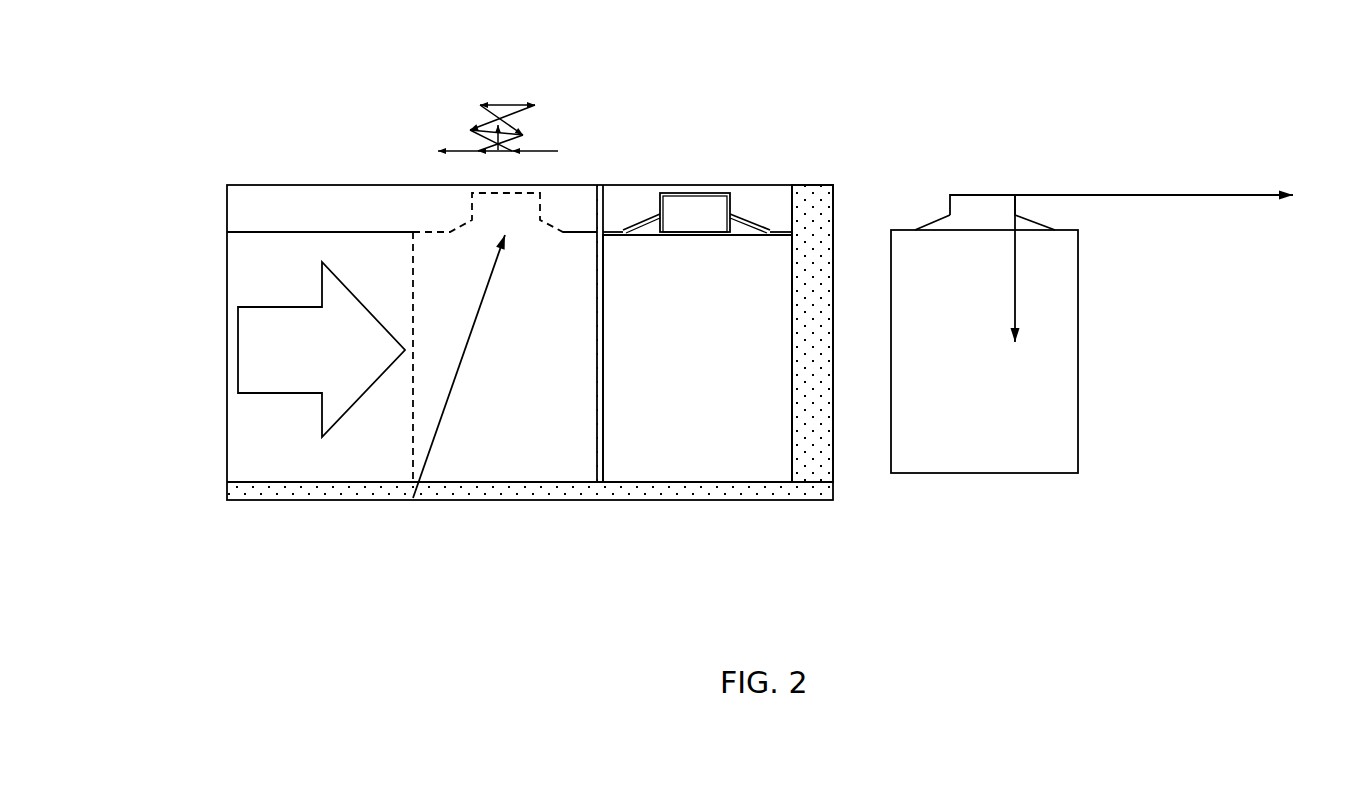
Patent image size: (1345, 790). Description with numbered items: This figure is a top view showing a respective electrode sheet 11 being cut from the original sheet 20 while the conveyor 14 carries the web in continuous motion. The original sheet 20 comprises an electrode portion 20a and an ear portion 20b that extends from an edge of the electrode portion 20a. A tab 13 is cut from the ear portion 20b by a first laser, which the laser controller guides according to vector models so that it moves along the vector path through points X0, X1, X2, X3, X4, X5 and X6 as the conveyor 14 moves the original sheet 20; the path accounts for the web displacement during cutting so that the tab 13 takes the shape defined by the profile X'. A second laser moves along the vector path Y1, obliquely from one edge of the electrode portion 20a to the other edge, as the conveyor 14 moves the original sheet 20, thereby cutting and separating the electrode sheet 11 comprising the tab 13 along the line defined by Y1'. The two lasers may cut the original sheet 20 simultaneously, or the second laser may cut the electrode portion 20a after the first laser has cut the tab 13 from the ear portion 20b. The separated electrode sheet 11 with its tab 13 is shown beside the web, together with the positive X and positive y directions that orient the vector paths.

The original sheet 20 is at (258, 92).
The electrode portion 20a is at (265, 445).
The ear portion 20b is at (347, 228).
The tab 13 is at (690, 227).
The conveyor 14 is at (812, 213).
The electrode sheet 11 is at (930, 205).
The tab shape profile X' is at (498, 172).
The second laser vector path Y1 is at (459, 366).
The electrode sheet cut shape Y1' is at (346, 392).
The vector path point X0 is at (535, 153).
The vector path point X1 is at (491, 138).
The vector path point X2 is at (502, 120).
The vector path point X3 is at (507, 99).
The vector path point X4 is at (500, 128).
The vector path point X5 is at (495, 157).
The vector path point X6 is at (458, 153).